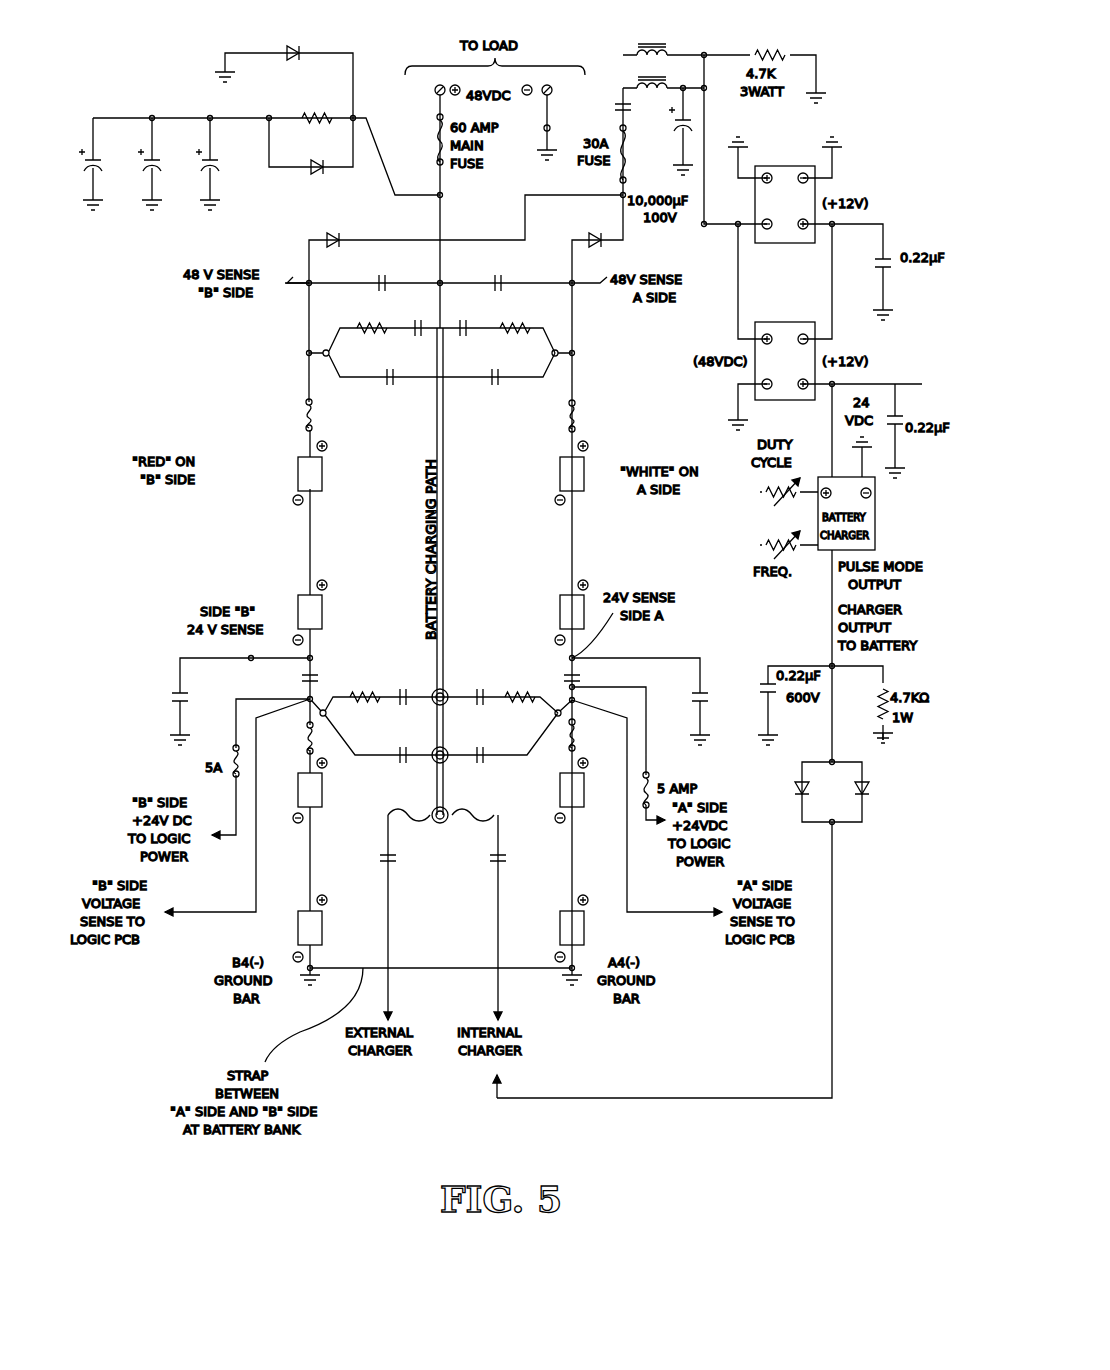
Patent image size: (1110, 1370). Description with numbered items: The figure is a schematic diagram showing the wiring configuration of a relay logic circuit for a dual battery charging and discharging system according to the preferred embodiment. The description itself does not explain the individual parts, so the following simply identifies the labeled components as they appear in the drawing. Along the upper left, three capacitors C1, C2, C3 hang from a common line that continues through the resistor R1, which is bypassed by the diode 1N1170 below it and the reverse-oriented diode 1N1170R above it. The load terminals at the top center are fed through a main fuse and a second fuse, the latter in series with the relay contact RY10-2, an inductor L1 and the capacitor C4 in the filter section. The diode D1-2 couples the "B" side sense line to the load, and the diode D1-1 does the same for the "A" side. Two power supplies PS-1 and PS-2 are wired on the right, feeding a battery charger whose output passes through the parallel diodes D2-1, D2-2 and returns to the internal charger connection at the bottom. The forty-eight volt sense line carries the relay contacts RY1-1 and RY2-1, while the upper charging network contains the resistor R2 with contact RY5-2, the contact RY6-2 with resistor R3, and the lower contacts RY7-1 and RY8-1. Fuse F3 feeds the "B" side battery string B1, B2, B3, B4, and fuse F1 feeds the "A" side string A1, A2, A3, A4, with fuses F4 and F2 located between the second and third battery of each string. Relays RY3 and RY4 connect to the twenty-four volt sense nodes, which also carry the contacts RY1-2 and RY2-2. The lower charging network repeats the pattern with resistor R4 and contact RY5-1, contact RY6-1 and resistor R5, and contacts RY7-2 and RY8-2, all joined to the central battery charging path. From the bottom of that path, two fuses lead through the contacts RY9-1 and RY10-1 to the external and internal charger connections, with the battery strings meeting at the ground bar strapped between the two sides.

The filter capacitor C1 is at (98, 164).
The filter capacitor C2 is at (157, 164).
The filter capacitor C3 is at (215, 164).
The 10W 5 ohm resistor R1 is at (307, 115).
The diode 1N1170 is at (311, 155).
The reverse diode 1N1170R is at (289, 72).
The A side load diode D1-1 is at (593, 228).
The B side load diode D1-2 is at (350, 233).
The relay RY10 contact 2 RY10-2 is at (597, 106).
The inductor L1 is at (662, 63).
The 10,000 uF capacitor C4 is at (669, 131).
The power supply 1 PS-1 is at (785, 204).
The power supply 2 PS-2 is at (785, 361).
The relay RY1 contact 1 RY1-1 is at (375, 273).
The relay RY2 contact 1 RY2-1 is at (491, 273).
The 10W 0.5 ohm resistor R2 is at (370, 327).
The relay RY5 contact 2 RY5-2 is at (414, 318).
The relay RY6 contact 2 RY6-2 is at (468, 318).
The 10W 0.5 ohm resistor R3 is at (502, 327).
The relay RY7 contact 1 RY7-1 is at (383, 387).
The relay RY8 contact 1 RY8-1 is at (488, 387).
The 60A fuse F3 is at (313, 415).
The 60A fuse F1 is at (577, 416).
The 12V battery B1 is at (321, 473).
The 12V battery B2 is at (321, 612).
The 12V battery B3 is at (321, 790).
The 12V battery B4 is at (321, 928).
The 12V battery A1 is at (558, 473).
The 12V battery A2 is at (558, 612).
The 12V battery A3 is at (558, 790).
The 12V battery A4 is at (558, 928).
The relay RY3 is at (161, 697).
The relay RY4 is at (653, 701).
The relay RY1 contact 2 RY1-2 is at (301, 681).
The relay RY2 contact 2 RY2-2 is at (573, 681).
The 10W resistor R4 is at (363, 716).
The 10W resistor R5 is at (519, 716).
The relay RY5 contact 1 RY5-1 is at (396, 687).
The relay RY6 contact 1 RY6-1 is at (473, 687).
The relay RY7 contact 2 RY7-2 is at (396, 771).
The relay RY8 contact 2 RY8-2 is at (473, 771).
The 60A fuse F4 is at (294, 743).
The 60A fuse F2 is at (589, 735).
The relay RY9 contact 1 RY9-1 is at (406, 847).
The relay RY10 contact 1 RY10-1 is at (499, 847).
The charger output diode D2-1 is at (808, 792).
The charger output diode D2-2 is at (877, 790).